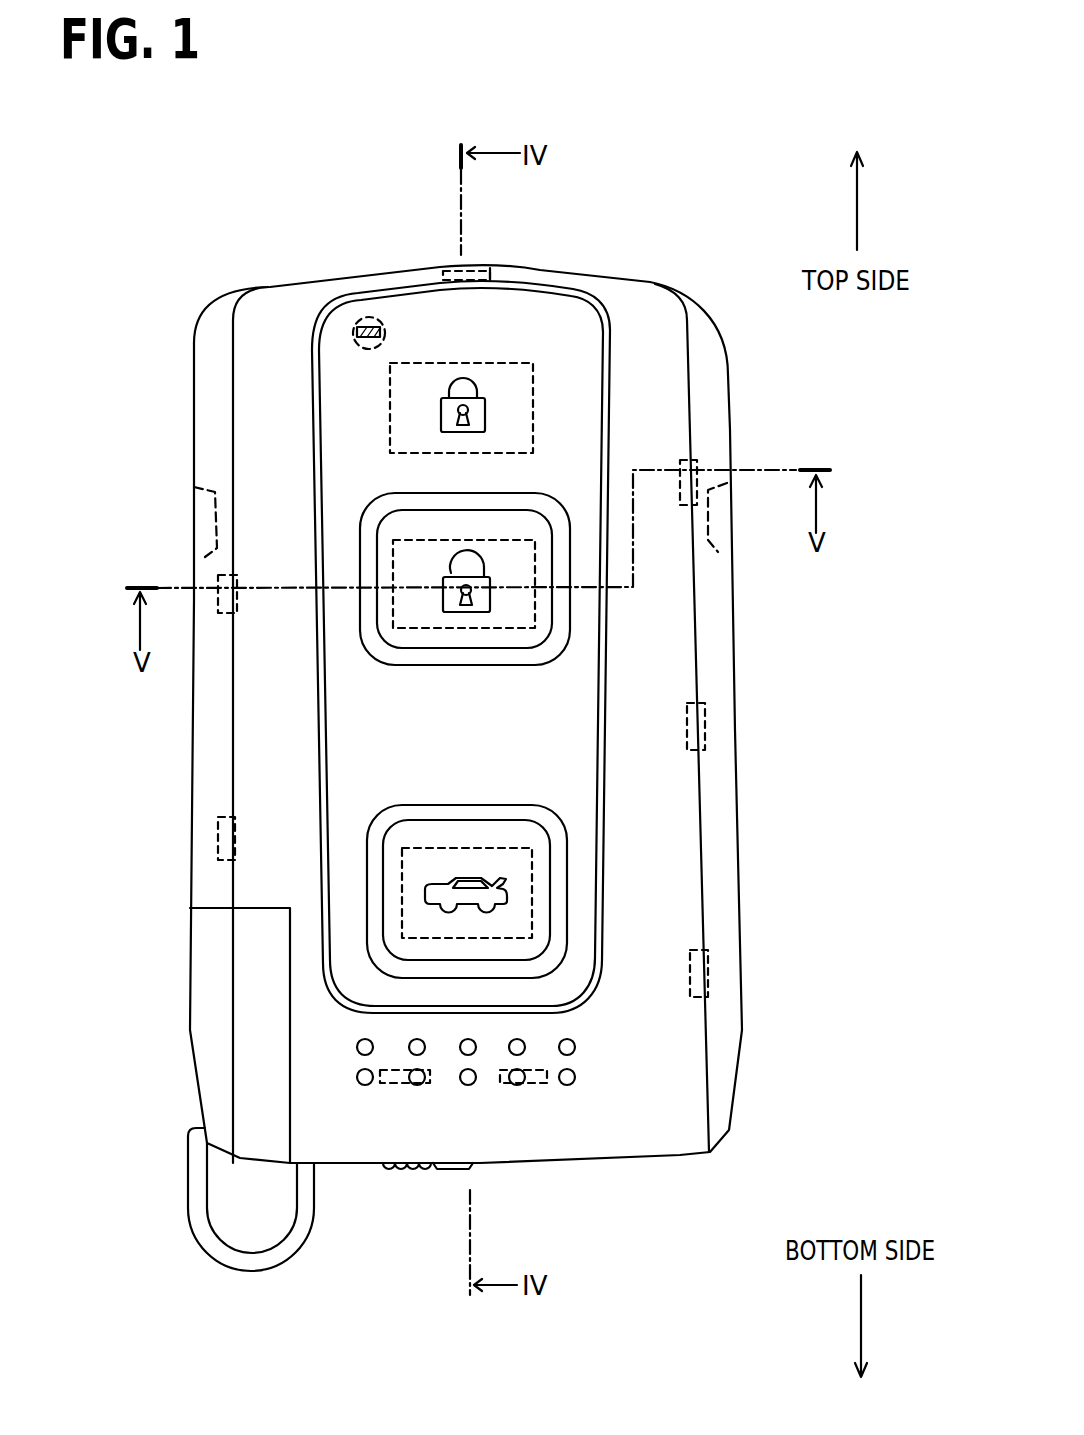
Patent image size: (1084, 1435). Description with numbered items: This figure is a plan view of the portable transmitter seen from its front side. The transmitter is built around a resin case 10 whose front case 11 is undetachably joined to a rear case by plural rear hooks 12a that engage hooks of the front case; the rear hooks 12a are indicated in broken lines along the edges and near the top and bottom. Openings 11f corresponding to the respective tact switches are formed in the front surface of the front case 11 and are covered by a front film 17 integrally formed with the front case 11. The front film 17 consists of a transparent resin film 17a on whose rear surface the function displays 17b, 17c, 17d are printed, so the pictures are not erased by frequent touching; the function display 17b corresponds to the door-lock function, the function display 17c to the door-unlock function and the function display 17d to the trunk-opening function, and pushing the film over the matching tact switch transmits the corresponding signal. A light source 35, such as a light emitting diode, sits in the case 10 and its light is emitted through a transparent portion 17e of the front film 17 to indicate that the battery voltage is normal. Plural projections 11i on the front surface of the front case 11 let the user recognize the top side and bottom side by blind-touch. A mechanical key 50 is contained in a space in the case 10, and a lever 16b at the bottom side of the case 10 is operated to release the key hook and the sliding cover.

The case 10 is at (747, 1142).
The front case 11 is at (675, 1110).
The openings 11f is at (525, 440).
The projections 11i is at (575, 1080).
The rear hooks 12a is at (498, 265).
The lever 16b is at (445, 1170).
The front film 17 is at (561, 325).
The transparent resin film 17a is at (575, 368).
The function display 17b is at (440, 410).
The function display 17c is at (457, 615).
The function display 17d is at (425, 892).
The transparent portion 17e is at (367, 323).
The light source 35 is at (378, 316).
The mechanical key 50 is at (205, 966).